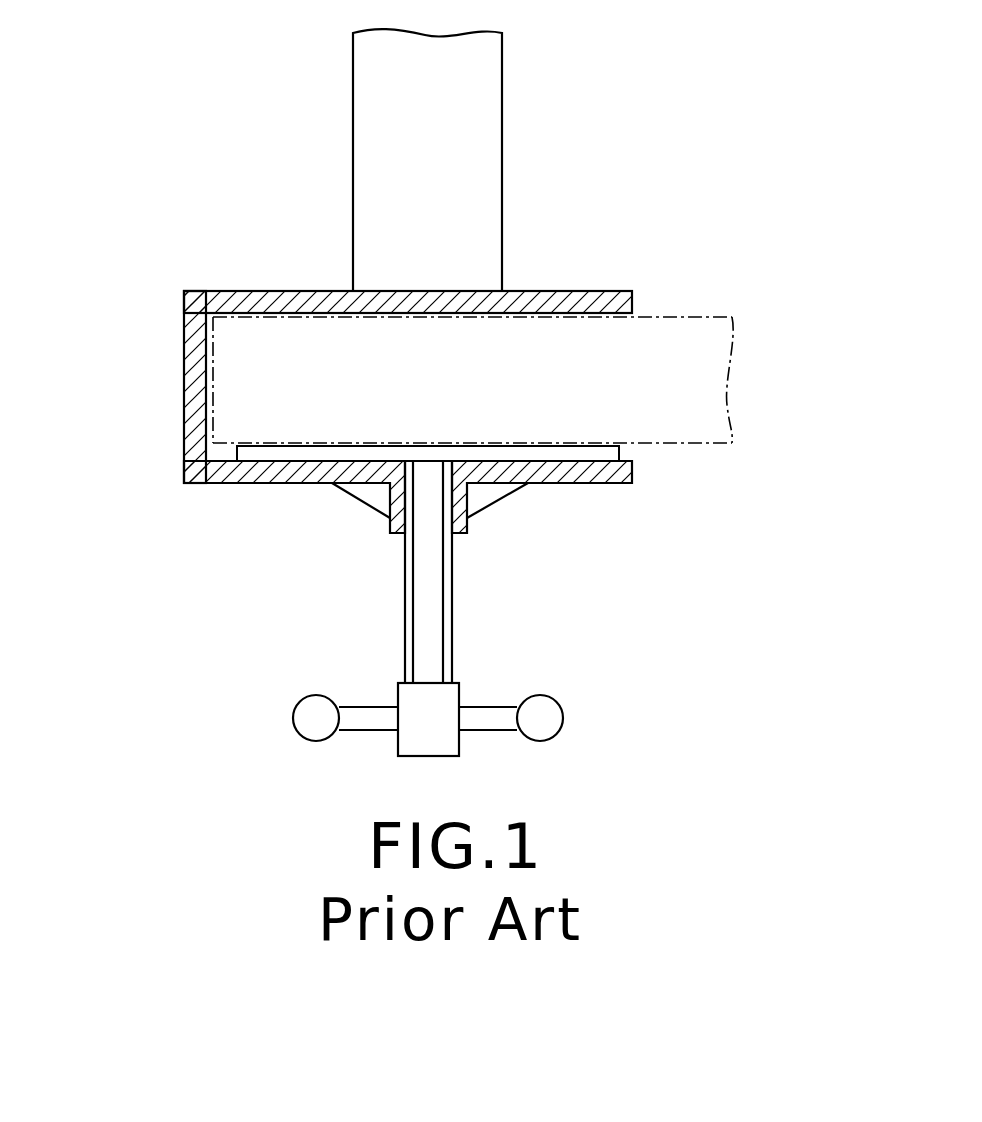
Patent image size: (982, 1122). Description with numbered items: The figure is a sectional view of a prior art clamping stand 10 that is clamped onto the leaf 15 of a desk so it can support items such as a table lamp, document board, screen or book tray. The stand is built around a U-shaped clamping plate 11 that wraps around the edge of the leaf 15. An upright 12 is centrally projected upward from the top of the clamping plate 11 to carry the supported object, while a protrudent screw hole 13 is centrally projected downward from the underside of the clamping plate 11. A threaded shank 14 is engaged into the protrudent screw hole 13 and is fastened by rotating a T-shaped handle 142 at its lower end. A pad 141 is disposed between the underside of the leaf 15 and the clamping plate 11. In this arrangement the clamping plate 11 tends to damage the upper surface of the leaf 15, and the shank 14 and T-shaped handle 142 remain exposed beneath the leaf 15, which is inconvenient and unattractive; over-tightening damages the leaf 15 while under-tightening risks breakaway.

The clamping stand 10 is at (178, 580).
The U-shaped clamping plate 11 is at (184, 330).
The upright 12 is at (493, 136).
The protrudent screw hole 13 is at (460, 515).
The threaded shank 14 is at (442, 598).
The pad 141 is at (605, 453).
The T-shaped handle 142 is at (553, 718).
The leaf 15 is at (718, 352).